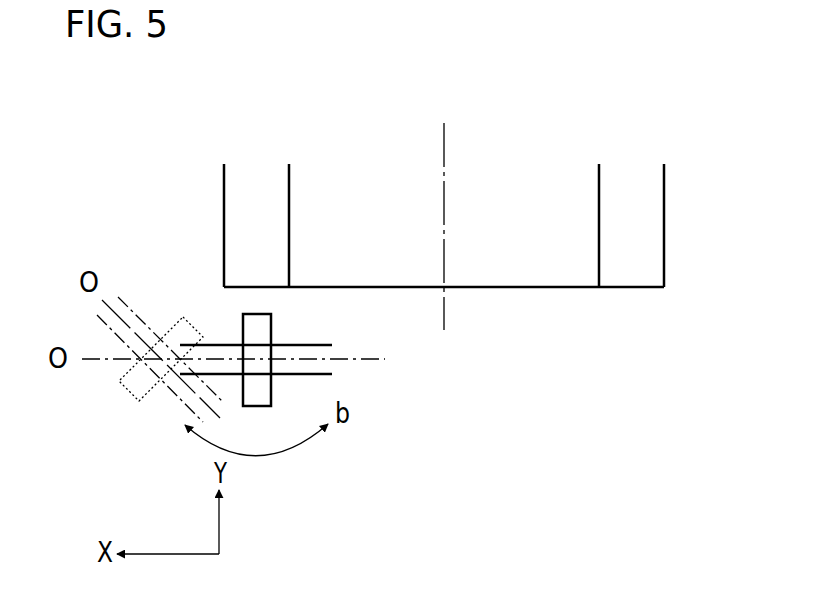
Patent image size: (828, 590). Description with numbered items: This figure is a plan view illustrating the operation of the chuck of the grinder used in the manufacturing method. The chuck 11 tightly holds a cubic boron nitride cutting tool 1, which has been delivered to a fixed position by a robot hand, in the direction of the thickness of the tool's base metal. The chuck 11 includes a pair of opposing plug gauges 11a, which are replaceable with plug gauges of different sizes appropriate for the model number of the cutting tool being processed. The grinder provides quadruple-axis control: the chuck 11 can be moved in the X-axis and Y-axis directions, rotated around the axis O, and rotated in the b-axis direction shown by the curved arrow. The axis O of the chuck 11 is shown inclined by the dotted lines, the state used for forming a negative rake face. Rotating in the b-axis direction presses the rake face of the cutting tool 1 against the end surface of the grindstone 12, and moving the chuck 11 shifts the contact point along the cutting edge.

The cubic boron nitride cutting tool 1 is at (274, 321).
The chuck 11 is at (331, 342).
The plug gauges 11a is at (218, 345).
The grindstone 12 is at (623, 270).